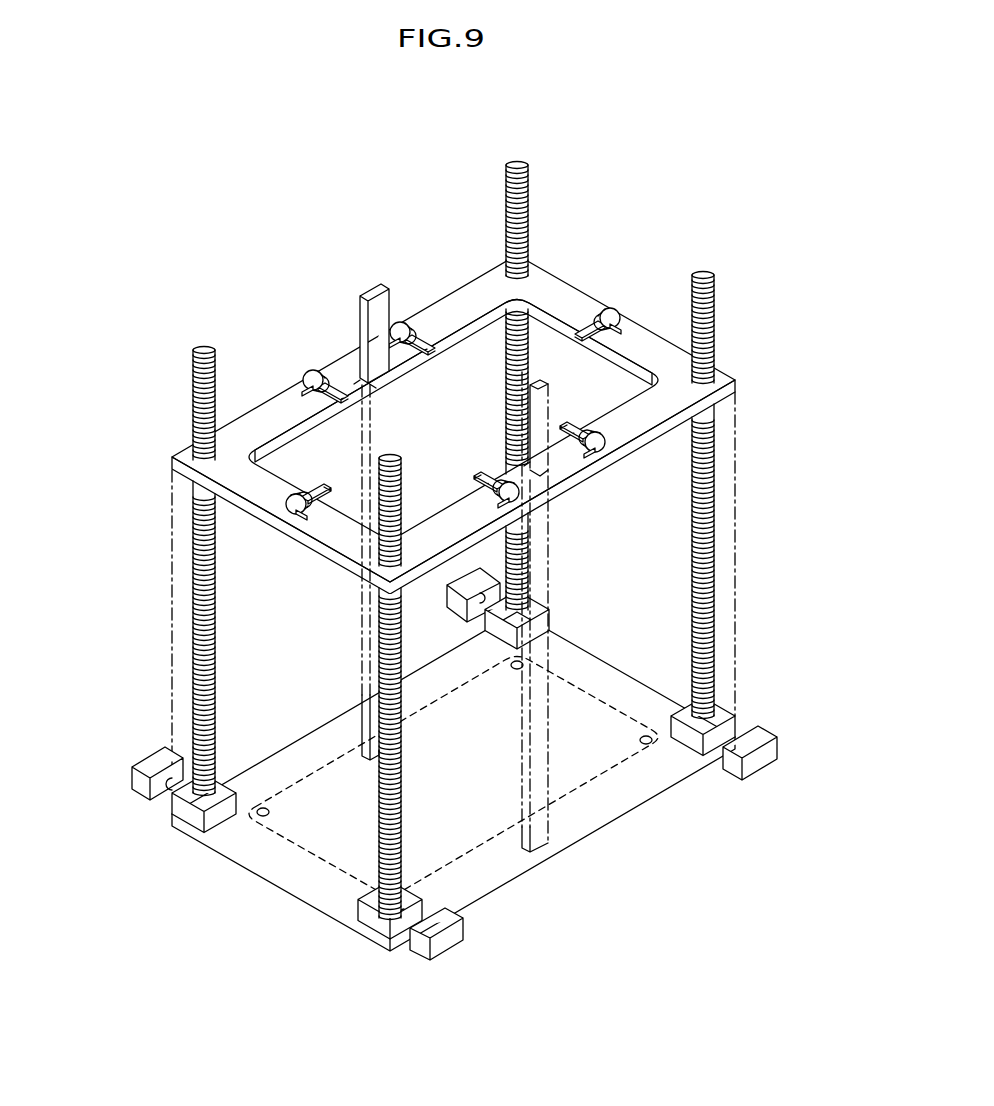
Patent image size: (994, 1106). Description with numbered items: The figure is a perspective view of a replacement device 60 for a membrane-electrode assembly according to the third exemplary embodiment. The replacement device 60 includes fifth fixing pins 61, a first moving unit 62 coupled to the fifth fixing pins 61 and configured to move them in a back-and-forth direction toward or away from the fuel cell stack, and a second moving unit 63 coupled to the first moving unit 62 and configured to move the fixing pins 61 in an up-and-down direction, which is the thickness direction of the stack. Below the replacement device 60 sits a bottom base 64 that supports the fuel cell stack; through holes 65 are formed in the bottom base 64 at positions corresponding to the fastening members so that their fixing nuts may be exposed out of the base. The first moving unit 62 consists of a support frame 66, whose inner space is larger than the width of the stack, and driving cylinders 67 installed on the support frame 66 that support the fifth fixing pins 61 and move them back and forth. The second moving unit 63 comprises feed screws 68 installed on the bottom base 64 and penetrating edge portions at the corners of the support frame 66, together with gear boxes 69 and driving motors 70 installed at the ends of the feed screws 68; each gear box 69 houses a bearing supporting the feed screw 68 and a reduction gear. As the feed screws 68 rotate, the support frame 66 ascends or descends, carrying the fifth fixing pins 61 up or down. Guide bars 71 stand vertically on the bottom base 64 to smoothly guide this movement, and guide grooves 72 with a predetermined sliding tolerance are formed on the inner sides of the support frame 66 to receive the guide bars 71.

The replacement device 60 is at (467, 92).
The fifth fixing pins 61 is at (605, 308).
The first moving unit 62 is at (322, 550).
The second moving unit 63 is at (721, 612).
The bottom base 64 is at (322, 888).
The through holes 65 is at (260, 818).
The support frame 66 is at (465, 300).
The driving cylinders 67 is at (628, 322).
The feed screws 68 is at (530, 183).
The gear boxes 69 is at (722, 710).
The driving motors 70 is at (152, 790).
The guide bars 71 is at (372, 292).
The guide grooves 72 is at (378, 358).